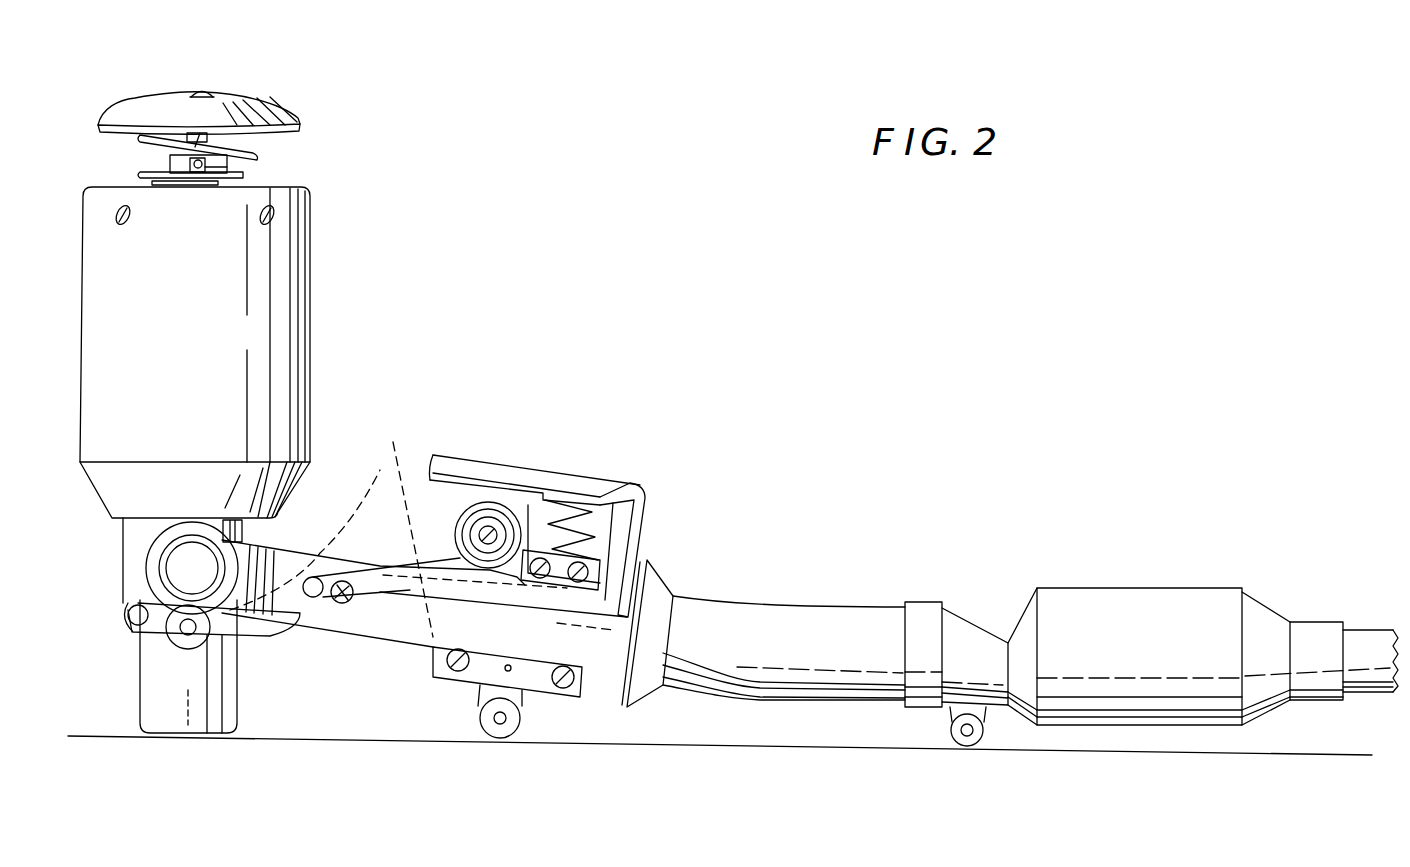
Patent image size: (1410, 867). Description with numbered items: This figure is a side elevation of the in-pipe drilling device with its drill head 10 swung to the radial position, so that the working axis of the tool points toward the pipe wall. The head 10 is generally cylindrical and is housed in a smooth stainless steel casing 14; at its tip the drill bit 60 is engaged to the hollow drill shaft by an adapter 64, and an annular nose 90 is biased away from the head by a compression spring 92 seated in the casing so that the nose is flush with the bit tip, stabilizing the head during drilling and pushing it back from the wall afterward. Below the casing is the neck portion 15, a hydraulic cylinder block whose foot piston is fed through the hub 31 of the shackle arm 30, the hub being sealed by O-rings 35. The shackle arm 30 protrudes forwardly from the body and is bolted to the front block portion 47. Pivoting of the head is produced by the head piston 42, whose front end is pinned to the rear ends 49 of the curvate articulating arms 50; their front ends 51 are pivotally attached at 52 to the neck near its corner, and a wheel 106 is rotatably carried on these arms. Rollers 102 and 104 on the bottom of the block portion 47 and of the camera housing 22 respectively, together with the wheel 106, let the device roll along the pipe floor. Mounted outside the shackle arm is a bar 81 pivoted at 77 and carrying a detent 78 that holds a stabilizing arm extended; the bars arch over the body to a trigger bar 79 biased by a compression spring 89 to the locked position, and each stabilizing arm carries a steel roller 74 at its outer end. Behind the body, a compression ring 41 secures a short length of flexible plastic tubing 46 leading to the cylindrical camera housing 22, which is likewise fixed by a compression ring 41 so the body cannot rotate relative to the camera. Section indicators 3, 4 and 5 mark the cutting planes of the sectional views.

The head 10 is at (340, 344).
The casing 14 is at (209, 366).
The neck portion 15 is at (160, 690).
The cylindrical housing 22 is at (1155, 588).
The shackle arm 30 is at (427, 650).
The hub 31 is at (150, 548).
The O-rings 35 is at (196, 555).
The compression ring 41 is at (668, 578).
The head piston 42 is at (407, 525).
The flexible plastic tubing 46 is at (782, 602).
The front block portion 47 is at (540, 678).
The rear ends 49 is at (376, 490).
The articulating arms 50 is at (245, 627).
The front ends 51 is at (125, 626).
The pivotal attachment point 52 is at (130, 628).
The drill bit 60 is at (222, 86).
The adapter 64 is at (243, 166).
The steel roller 74 is at (456, 525).
The pivotal attachment 77 is at (357, 598).
The detent 78 is at (512, 572).
The trigger bar 79 is at (518, 466).
The bar 81 is at (427, 632).
The compression spring 89 is at (597, 520).
The annular nose 90 is at (258, 108).
The compression spring 92 is at (262, 152).
The roller 102 is at (520, 735).
The roller 104 is at (980, 747).
The wheel 106 is at (205, 645).
The section line 3- 3 is at (203, 568).
The section line 4- 4 is at (275, 668).
The section line 5- 5 is at (203, 118).